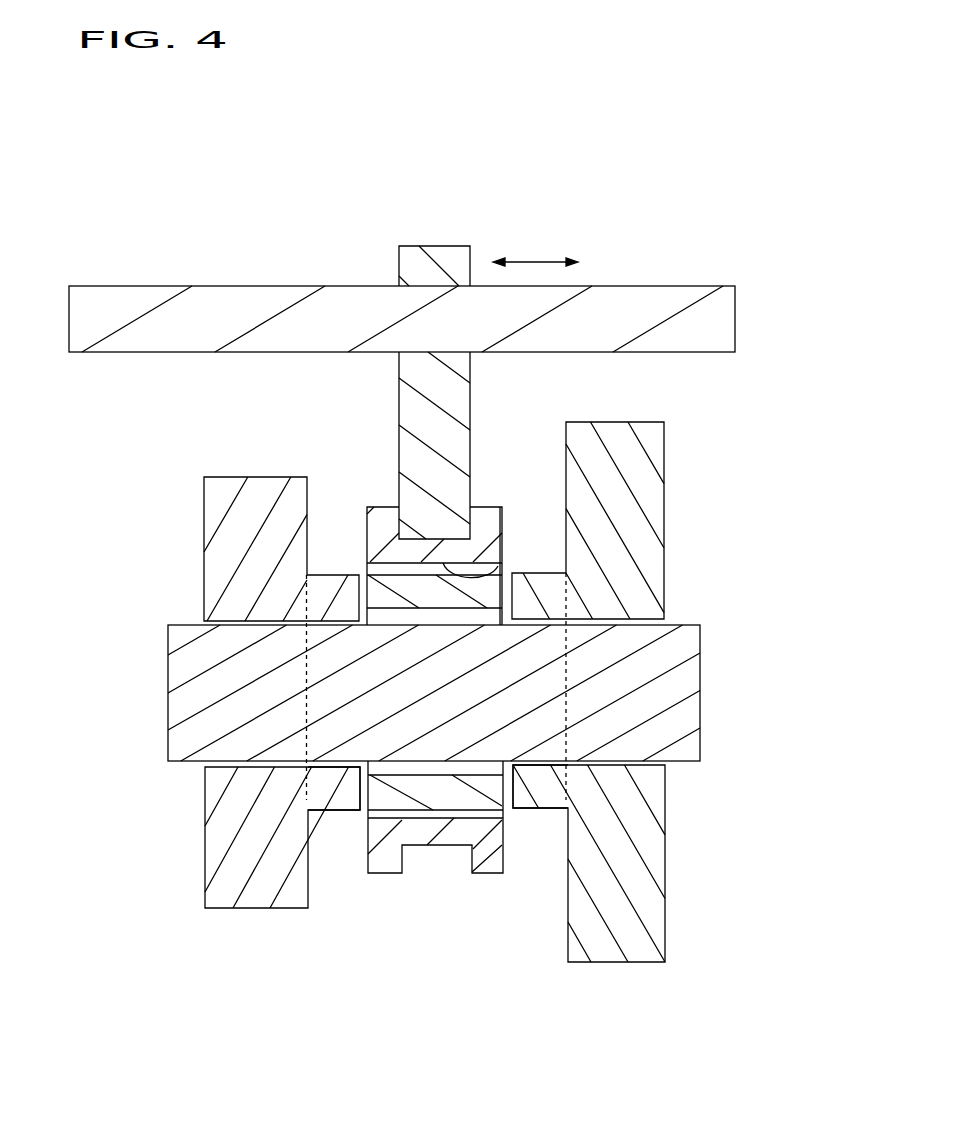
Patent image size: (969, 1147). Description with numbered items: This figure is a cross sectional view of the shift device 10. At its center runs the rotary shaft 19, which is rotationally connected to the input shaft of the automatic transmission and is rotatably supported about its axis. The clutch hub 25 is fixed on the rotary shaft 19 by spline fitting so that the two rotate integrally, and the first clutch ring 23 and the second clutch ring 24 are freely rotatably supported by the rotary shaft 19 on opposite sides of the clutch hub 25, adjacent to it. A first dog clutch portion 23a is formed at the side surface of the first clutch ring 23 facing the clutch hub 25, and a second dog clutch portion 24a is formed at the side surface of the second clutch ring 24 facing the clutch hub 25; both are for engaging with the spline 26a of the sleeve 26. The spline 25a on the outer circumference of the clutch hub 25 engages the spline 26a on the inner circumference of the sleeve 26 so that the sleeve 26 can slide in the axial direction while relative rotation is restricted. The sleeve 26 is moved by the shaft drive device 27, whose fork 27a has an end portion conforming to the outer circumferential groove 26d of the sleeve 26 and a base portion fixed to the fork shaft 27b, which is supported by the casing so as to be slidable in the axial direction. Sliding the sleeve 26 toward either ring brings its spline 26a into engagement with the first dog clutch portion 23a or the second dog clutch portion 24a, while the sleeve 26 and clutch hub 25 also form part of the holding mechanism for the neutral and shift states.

The shift device 10 is at (707, 207).
The rotary shaft 19 is at (660, 694).
The first clutch ring 23 is at (647, 897).
The first dog clutch portion 23a is at (527, 802).
The second clutch ring 24 is at (218, 848).
The second dog clutch portion 24a is at (342, 800).
The clutch hub 25 is at (446, 793).
The spline 25a is at (413, 793).
The sleeve 26 is at (381, 530).
The spline 26a is at (503, 566).
The outer circumferential groove 26d is at (432, 535).
The shaft drive device 27 is at (597, 248).
The fork 27a is at (449, 265).
The fork shaft 27b is at (216, 303).